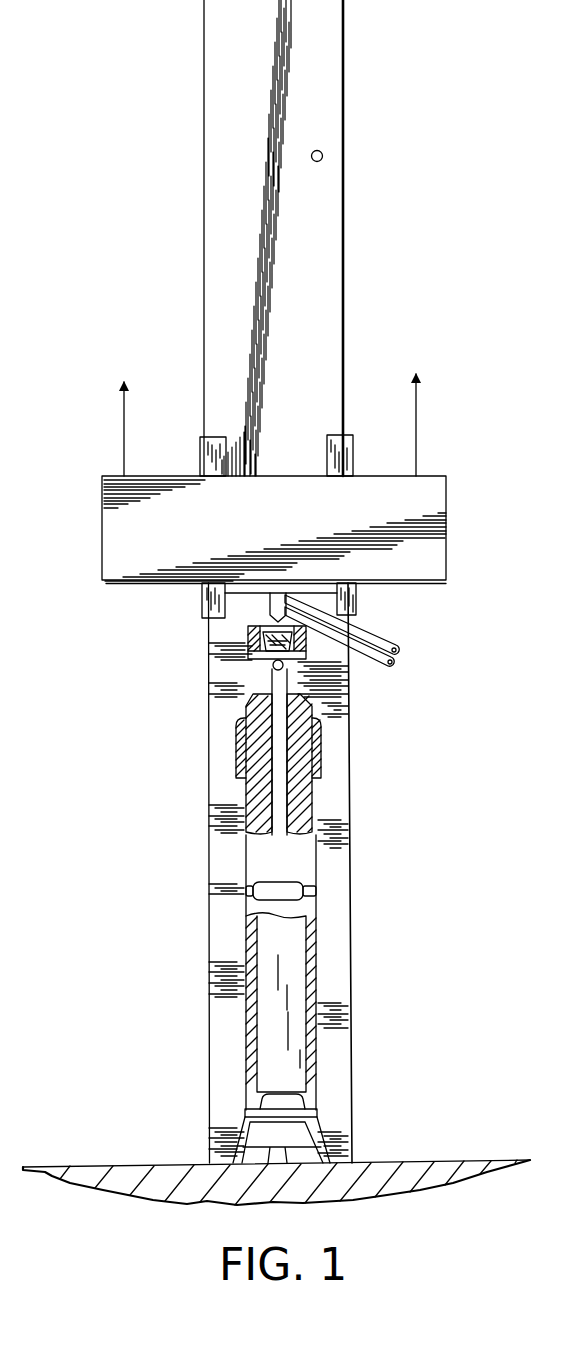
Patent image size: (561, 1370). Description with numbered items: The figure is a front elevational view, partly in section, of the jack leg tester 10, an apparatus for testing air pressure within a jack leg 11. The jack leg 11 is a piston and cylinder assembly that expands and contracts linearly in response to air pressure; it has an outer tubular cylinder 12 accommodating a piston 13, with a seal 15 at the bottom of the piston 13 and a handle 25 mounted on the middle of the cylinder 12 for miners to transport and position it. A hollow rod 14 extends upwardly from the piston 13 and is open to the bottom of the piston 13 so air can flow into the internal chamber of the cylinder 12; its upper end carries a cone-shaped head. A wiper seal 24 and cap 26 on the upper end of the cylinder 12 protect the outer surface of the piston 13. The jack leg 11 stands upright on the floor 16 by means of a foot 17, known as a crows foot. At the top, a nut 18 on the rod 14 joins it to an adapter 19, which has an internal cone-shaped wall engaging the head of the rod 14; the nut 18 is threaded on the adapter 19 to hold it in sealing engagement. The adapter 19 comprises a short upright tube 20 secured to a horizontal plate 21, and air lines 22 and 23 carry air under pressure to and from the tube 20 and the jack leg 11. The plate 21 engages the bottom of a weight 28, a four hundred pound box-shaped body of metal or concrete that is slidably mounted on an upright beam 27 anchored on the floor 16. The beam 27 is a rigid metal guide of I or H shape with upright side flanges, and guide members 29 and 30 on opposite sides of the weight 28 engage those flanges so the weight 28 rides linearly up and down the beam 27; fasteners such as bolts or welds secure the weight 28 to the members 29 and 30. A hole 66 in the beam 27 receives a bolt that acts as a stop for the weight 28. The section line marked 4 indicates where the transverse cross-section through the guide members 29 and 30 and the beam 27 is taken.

The section line 4- 4 is at (95, 457).
The jack leg tester 10 is at (387, 284).
The jack leg 11 is at (243, 958).
The cylinder 12 is at (308, 958).
The piston 13 is at (283, 733).
The hollow rod 14 is at (349, 689).
The seal 15 is at (290, 1090).
The floor 16 is at (118, 1166).
The foot 17 is at (328, 1150).
The nut 18 is at (243, 660).
The adapter 19 is at (268, 618).
The upright tube 20 is at (357, 600).
The horizontal plate 21 is at (190, 600).
The air line 22 is at (385, 637).
The air line 23 is at (402, 664).
The wiper seal 24 is at (268, 690).
The handle 25 is at (292, 892).
The cap 26 is at (234, 773).
The upright beam 27 is at (214, 232).
The weight 28 is at (447, 528).
The guide member 29 is at (200, 458).
The guide member 30 is at (355, 441).
The hole 66 is at (323, 157).